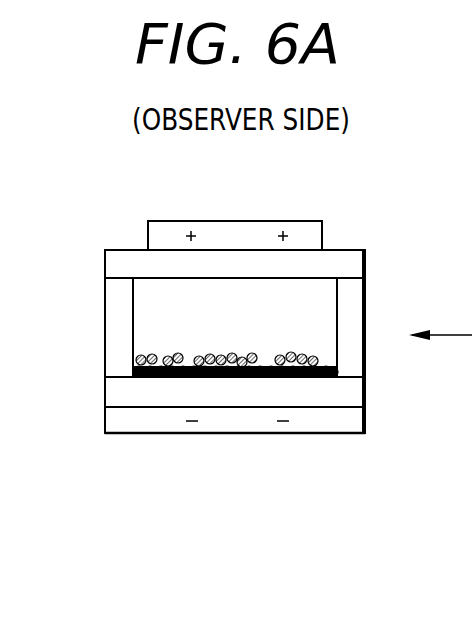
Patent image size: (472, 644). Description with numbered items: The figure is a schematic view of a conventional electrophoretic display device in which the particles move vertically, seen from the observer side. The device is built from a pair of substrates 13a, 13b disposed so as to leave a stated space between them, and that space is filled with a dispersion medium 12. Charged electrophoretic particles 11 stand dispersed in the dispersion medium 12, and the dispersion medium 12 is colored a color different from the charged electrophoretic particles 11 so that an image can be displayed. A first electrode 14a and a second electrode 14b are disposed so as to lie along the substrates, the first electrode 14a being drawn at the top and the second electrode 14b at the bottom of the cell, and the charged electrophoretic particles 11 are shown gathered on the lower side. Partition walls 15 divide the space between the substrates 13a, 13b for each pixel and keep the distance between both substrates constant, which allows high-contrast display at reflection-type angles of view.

The charged electrophoretic particles 11 is at (220, 355).
The dispersion medium 12 is at (253, 300).
The substrate 13a is at (342, 265).
The substrate 13b is at (333, 395).
The first electrode 14a is at (163, 236).
The second electrode 14b is at (131, 420).
The partition walls 15 is at (120, 303).